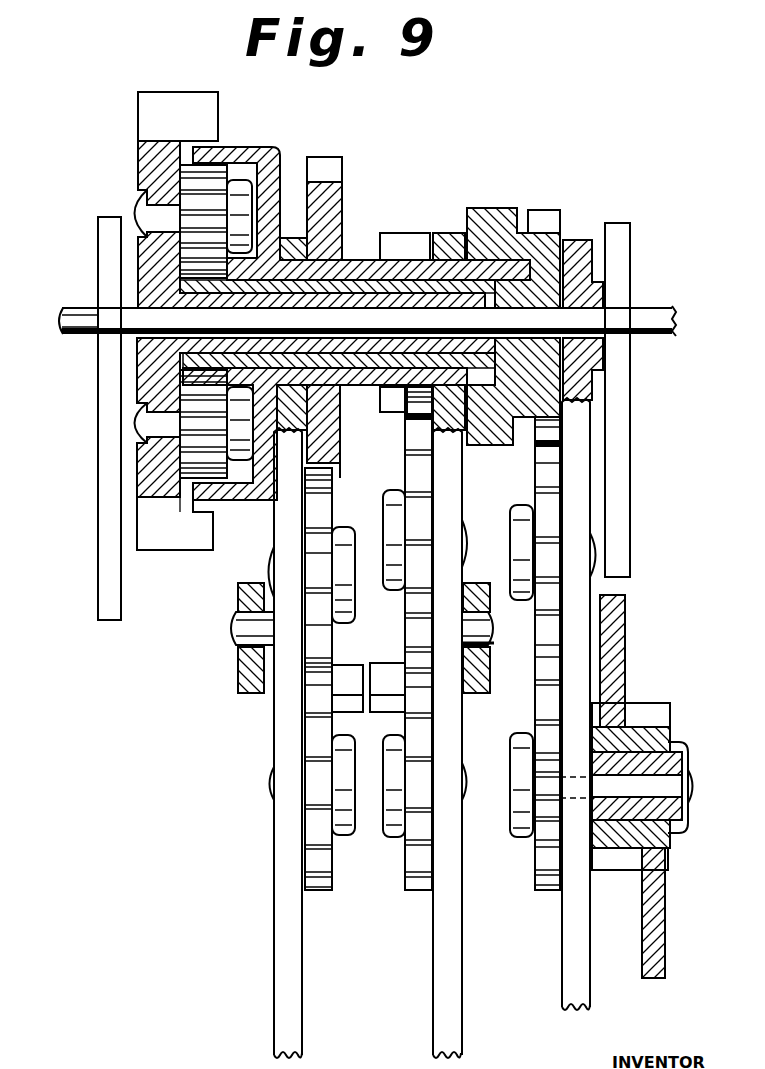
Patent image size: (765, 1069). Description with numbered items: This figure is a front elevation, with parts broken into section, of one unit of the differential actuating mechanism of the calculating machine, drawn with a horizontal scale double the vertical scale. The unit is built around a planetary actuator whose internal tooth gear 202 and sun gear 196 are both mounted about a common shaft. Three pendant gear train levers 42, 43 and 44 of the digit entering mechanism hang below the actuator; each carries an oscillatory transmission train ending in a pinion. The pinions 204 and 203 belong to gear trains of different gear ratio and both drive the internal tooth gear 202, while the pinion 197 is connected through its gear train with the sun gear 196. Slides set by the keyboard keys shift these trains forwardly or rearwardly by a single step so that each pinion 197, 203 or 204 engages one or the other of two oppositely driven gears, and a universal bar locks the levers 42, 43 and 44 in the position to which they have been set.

The internal tooth gear 202 is at (223, 150).
The sun gear 196 is at (180, 391).
The pinion 204 is at (320, 884).
The pinion 203 is at (413, 883).
The pinion 197 is at (543, 883).
The pendant gear train lever 42 is at (288, 1015).
The pendant gear train lever 43 is at (445, 1017).
The pendant gear train lever 44 is at (570, 987).